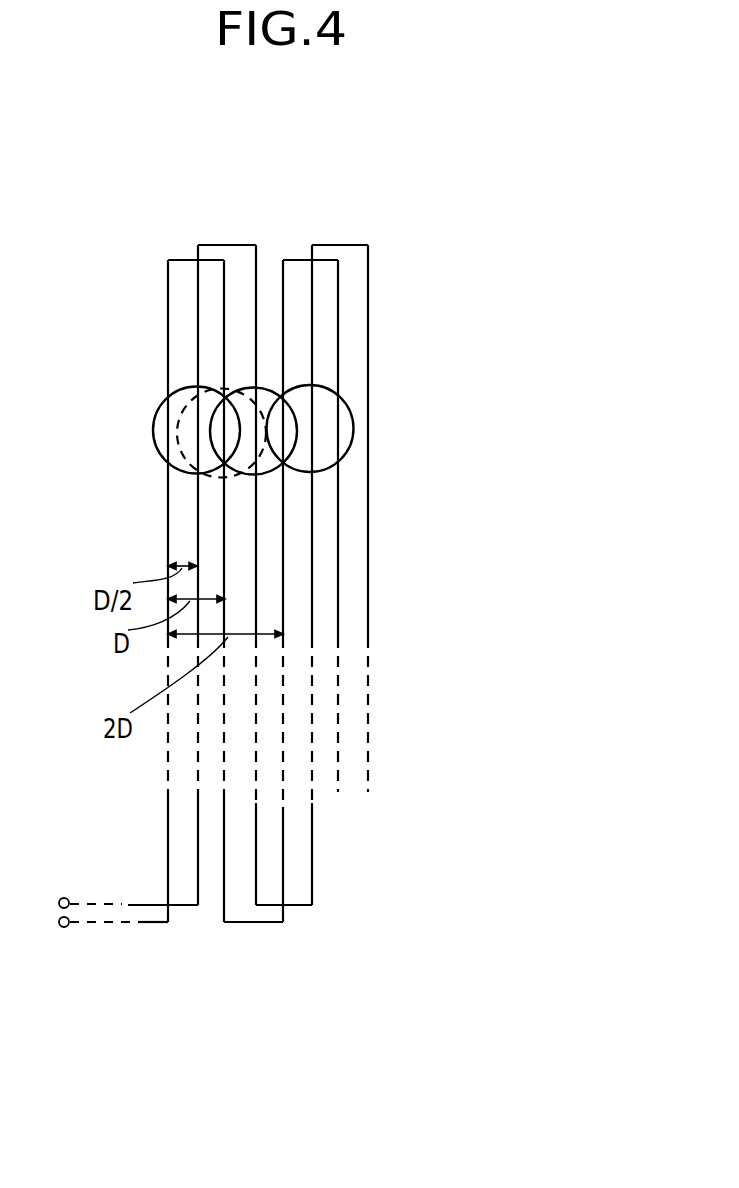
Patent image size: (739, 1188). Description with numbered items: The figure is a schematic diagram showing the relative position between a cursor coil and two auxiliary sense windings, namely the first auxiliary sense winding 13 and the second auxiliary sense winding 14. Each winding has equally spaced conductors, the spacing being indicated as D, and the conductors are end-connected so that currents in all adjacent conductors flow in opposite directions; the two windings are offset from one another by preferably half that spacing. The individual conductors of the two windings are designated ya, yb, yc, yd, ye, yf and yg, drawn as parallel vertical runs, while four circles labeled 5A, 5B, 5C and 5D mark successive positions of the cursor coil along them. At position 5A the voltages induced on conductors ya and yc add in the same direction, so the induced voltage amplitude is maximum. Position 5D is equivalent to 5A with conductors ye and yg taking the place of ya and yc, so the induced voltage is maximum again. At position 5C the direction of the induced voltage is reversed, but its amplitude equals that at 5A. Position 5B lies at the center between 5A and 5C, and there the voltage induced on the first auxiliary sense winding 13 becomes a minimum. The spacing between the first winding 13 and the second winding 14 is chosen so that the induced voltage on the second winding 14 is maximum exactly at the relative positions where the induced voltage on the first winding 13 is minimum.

The conductor ya is at (168, 310).
The conductor yb is at (198, 318).
The conductor yc is at (224, 325).
The conductor yd is at (256, 257).
The conductor ye is at (283, 270).
The conductor yf is at (312, 314).
The conductor yg is at (338, 352).
The relative position of cursor coil 5A is at (155, 448).
The relative position of cursor coil 5B is at (215, 473).
The relative position of cursor coil 5C is at (290, 450).
The relative position of cursor coil 5D is at (350, 420).
The auxiliary sense winding No. 1 13 is at (316, 583).
The auxiliary sense winding No. 2 14 is at (306, 601).